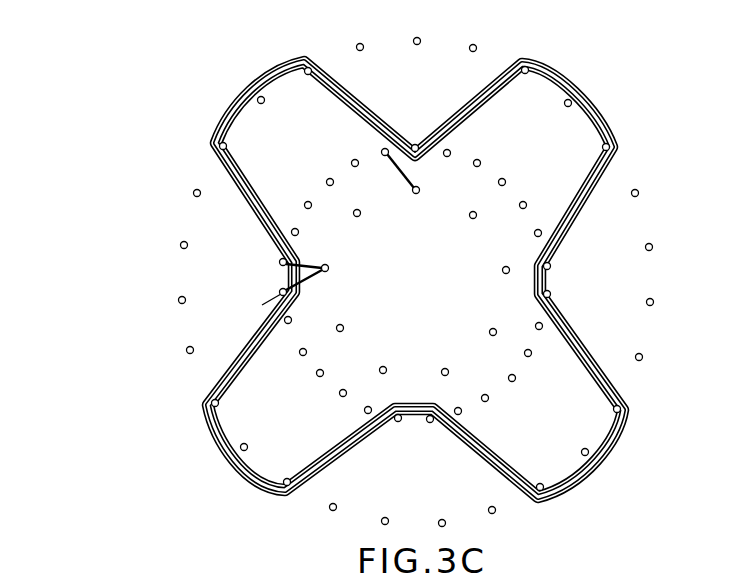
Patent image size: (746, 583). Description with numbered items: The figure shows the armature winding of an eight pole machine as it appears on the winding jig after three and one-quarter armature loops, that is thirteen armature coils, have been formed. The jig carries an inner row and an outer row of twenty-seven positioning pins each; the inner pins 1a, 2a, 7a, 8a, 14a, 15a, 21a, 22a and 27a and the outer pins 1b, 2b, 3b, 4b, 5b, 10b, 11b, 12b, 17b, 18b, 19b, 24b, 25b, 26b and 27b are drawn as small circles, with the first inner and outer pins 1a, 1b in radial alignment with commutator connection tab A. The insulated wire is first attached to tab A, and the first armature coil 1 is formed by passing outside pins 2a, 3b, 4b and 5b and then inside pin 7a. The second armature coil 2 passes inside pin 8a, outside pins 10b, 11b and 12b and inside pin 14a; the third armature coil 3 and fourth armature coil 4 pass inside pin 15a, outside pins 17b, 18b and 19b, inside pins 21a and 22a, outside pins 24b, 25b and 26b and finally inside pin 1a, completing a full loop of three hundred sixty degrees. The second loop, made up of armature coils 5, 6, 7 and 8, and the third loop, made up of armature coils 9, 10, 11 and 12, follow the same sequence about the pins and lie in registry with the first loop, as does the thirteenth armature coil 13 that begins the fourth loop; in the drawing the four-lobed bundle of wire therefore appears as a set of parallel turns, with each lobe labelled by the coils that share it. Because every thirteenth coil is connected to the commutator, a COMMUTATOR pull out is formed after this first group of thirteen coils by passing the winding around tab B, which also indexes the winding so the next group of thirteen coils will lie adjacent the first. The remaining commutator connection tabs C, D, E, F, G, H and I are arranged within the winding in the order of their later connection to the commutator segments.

The inner positioning pin 1a is at (416, 145).
The outer positioning pin 1b is at (418, 38).
The inner positioning pin 2a is at (381, 151).
The outer positioning pin 2b is at (366, 35).
The outer positioning pin 3b is at (312, 58).
The outer positioning pin 4b is at (256, 98).
The outer positioning pin 5b is at (219, 148).
The inner positioning pin 7a is at (279, 259).
The inner positioning pin 8a is at (290, 293).
The outer positioning pin 10b is at (210, 403).
The outer positioning pin 11b is at (240, 450).
The outer positioning pin 12b is at (286, 487).
The inner positioning pin 14a is at (398, 423).
The inner positioning pin 15a is at (430, 424).
The outer positioning pin 17b is at (545, 492).
The outer positioning pin 18b is at (589, 456).
The outer positioning pin 19b is at (623, 407).
The inner positioning pin 21a is at (551, 293).
The inner positioning pin 22a is at (551, 266).
The outer positioning pin 24b is at (612, 151).
The outer positioning pin 25b is at (575, 104).
The outer positioning pin 26b is at (528, 64).
The inner positioning pin 27a is at (450, 151).
The outer positioning pin 27b is at (482, 37).
The armature coil 1 is at (220, 122).
The armature coil 2 is at (228, 415).
The armature coil 3 is at (567, 485).
The armature coil 4 is at (562, 77).
The armature coil 5 is at (228, 110).
The armature coil 6 is at (253, 472).
The armature coil 7 is at (612, 443).
The armature coil 8 is at (565, 76).
The armature coil 9 is at (263, 77).
The armature coil 10 is at (262, 483).
The armature coil 11 is at (628, 425).
The armature coil 12 is at (577, 86).
The armature coil 13 is at (278, 66).
The commutator connection tab A is at (416, 194).
The commutator connection tab B is at (329, 268).
The commutator connection tab C is at (386, 367).
The commutator connection tab D is at (490, 330).
The commutator connection tab E is at (471, 218).
The commutator connection tab F is at (360, 216).
The commutator connection tab G is at (343, 325).
The commutator connection tab H is at (446, 368).
The commutator connection tab I is at (502, 270).
The commutator pull out COMMUTATOR is at (316, 268).